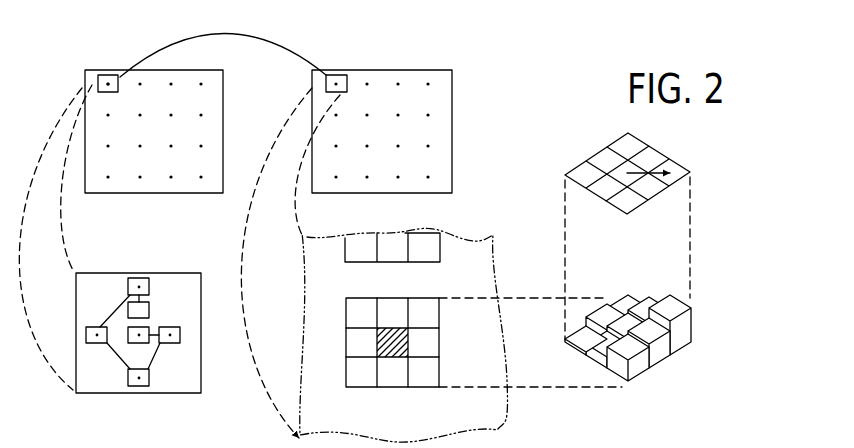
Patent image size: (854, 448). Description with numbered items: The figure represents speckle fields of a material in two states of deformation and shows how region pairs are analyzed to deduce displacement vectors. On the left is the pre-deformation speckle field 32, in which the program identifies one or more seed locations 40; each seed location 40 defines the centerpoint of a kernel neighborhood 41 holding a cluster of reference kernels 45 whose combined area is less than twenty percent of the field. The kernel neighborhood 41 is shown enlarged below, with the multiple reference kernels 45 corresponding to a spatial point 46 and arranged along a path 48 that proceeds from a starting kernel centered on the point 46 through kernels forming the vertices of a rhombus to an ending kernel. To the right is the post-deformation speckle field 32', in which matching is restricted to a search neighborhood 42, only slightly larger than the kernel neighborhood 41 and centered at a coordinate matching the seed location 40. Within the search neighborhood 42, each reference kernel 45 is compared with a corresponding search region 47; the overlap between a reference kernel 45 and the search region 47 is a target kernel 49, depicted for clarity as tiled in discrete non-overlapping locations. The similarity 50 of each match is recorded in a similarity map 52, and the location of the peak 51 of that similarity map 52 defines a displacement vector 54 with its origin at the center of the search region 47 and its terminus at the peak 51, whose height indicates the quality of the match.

The pre-deformation speckle field 32 is at (132, 116).
The post-deformation speckle field 32' is at (382, 106).
The seed location 40 is at (236, 60).
The kernel neighborhood 41 is at (107, 75).
The search neighborhood 42 is at (335, 75).
The reference kernel 45 is at (139, 386).
The spatial point 46 is at (170, 330).
The search region 47 is at (345, 250).
The path 48 is at (112, 308).
The target kernel 49 is at (357, 370).
The similarity 50 is at (657, 355).
The peak 51 is at (679, 161).
The similarity map 52 is at (579, 370).
The displacement vector 54 is at (658, 157).